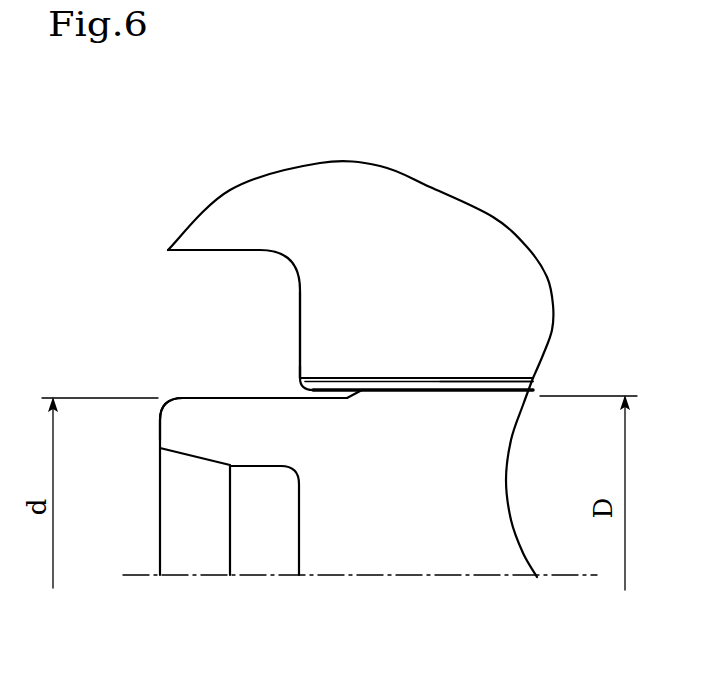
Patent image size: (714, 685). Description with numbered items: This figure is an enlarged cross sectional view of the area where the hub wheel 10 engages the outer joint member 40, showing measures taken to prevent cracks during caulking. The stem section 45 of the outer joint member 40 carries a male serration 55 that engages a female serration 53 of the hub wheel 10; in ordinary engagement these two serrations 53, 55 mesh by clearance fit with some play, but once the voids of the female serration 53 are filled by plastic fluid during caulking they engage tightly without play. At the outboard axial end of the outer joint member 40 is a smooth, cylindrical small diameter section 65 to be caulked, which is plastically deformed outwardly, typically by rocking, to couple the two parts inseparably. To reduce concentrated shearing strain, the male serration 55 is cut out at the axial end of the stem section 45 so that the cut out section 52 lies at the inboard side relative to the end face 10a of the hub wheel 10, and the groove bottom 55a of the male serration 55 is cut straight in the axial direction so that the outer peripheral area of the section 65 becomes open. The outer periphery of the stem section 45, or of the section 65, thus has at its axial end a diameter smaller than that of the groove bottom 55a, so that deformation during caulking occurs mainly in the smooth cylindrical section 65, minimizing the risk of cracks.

The hub wheel 10 is at (342, 228).
The end face of the hub wheel 10a is at (300, 350).
The cut out section 52 is at (352, 386).
The male serration 55 is at (414, 376).
The groove bottom of the male serration 55a is at (483, 379).
The female serration 53 is at (442, 393).
The outer joint member 40 is at (373, 537).
The section to be caulked 65 is at (198, 424).
The stem section 45 is at (466, 562).